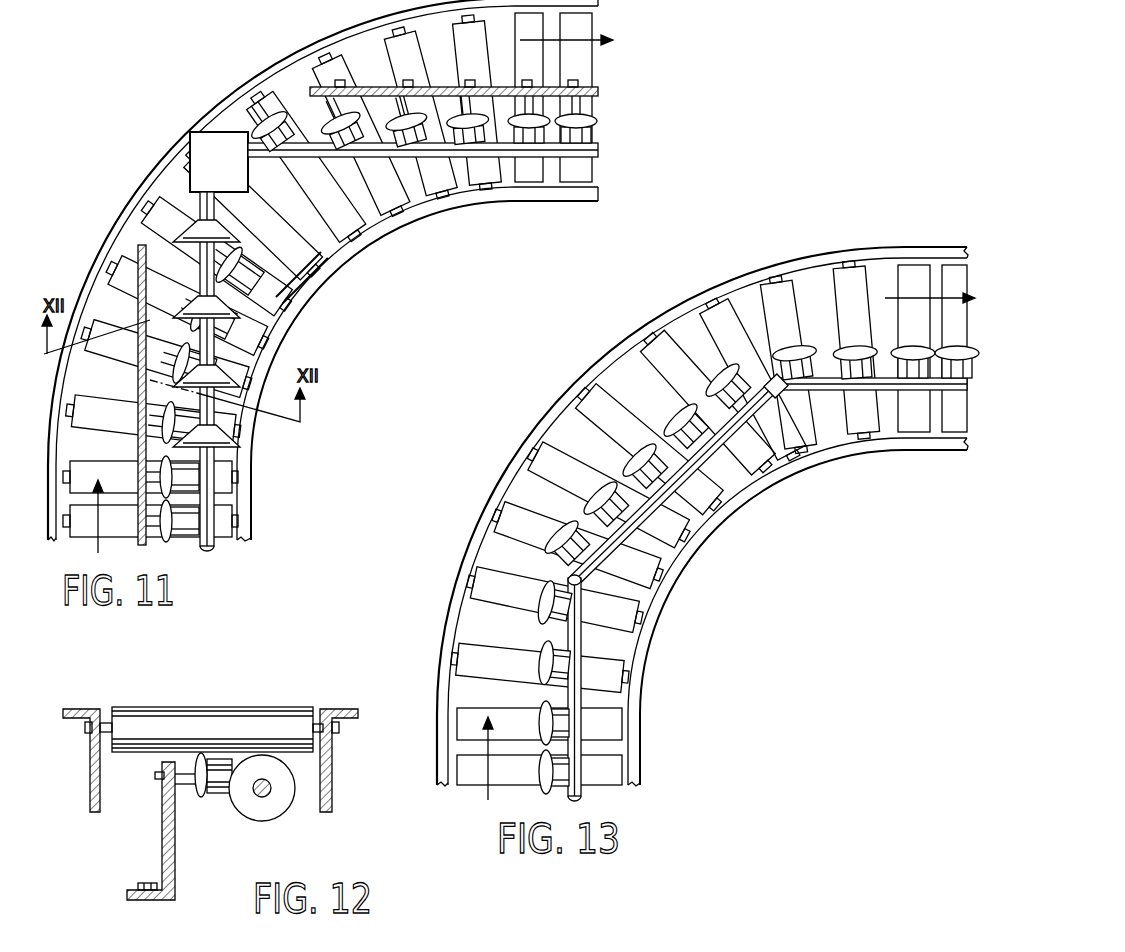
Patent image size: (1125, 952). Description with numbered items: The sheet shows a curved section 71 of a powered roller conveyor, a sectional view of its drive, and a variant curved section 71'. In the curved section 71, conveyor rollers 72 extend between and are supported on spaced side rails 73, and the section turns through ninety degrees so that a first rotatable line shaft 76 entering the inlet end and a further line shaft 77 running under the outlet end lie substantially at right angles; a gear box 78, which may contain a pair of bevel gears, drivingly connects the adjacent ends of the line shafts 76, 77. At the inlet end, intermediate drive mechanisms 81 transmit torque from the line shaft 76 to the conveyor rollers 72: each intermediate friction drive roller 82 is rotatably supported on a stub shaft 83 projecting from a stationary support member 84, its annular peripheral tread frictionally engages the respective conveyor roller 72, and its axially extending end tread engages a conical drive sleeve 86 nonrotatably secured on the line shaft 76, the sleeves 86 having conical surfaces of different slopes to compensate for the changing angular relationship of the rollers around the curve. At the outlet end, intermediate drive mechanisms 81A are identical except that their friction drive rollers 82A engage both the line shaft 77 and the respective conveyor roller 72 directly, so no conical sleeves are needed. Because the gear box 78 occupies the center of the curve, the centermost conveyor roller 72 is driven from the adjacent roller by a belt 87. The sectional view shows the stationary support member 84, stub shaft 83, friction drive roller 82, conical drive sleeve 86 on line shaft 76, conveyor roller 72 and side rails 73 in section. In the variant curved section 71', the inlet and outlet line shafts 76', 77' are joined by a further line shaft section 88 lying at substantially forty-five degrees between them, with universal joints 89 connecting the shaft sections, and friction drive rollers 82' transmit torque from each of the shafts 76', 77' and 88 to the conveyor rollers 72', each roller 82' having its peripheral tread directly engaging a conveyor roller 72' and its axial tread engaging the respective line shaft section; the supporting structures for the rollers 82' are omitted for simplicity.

In FIG. 11, the curved conveyor section 71 is at (417, 364).
In FIG. 11, the conveyor rollers 72 is at (327, 275).
In FIG. 12, the conveyor rollers 72 is at (212, 704).
In FIG. 11, the side rails 73 is at (232, 103).
In FIG. 12, the side rails 73 is at (92, 766).
In FIG. 11, the first rotatable line shaft 76 is at (252, 371).
In FIG. 12, the first rotatable line shaft 76 is at (272, 818).
In FIG. 11, the further rotatable line shaft 77 is at (423, 190).
In FIG. 11, the gear box 78 is at (205, 152).
In FIG. 11, the intermediate drive mechanism 81 is at (180, 327).
In FIG. 12, the intermediate drive mechanism 81 is at (228, 872).
In FIG. 11, the intermediate friction drive roller 82 is at (174, 373).
In FIG. 12, the intermediate friction drive roller 82 is at (218, 802).
In FIG. 12, the stub shaft 83 is at (187, 776).
In FIG. 11, the stationary support member 84 is at (140, 440).
In FIG. 12, the stationary support member 84 is at (167, 848).
In FIG. 11, the conical drive sleeve 86 is at (222, 316).
In FIG. 12, the conical drive sleeve 86 is at (282, 800).
In FIG. 11, the belt 87 is at (305, 283).
In FIG. 11, the intermediate drive mechanism 81A is at (610, 112).
In FIG. 11, the intermediate friction drive roller 82A is at (573, 133).
In FIG. 13, the curved conveyor section 71' is at (702, 516).
In FIG. 13, the conveyor rollers 72' is at (676, 522).
In FIG. 13, the line shaft 76' is at (635, 689).
In FIG. 13, the line shaft 77' is at (873, 434).
In FIG. 13, the friction drive roller 82' is at (723, 568).
In FIG. 13, the further line shaft section 88 is at (748, 456).
In FIG. 13, the universal joints 89 is at (773, 376).